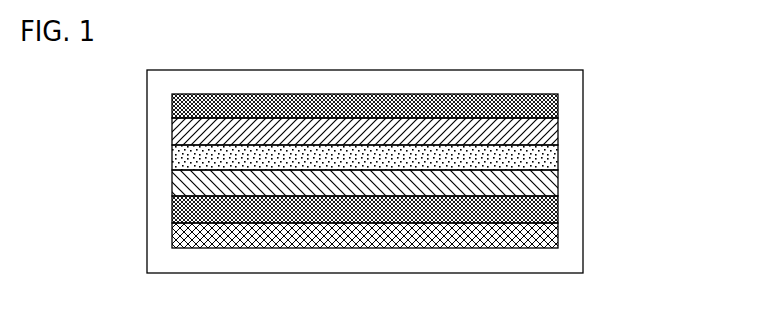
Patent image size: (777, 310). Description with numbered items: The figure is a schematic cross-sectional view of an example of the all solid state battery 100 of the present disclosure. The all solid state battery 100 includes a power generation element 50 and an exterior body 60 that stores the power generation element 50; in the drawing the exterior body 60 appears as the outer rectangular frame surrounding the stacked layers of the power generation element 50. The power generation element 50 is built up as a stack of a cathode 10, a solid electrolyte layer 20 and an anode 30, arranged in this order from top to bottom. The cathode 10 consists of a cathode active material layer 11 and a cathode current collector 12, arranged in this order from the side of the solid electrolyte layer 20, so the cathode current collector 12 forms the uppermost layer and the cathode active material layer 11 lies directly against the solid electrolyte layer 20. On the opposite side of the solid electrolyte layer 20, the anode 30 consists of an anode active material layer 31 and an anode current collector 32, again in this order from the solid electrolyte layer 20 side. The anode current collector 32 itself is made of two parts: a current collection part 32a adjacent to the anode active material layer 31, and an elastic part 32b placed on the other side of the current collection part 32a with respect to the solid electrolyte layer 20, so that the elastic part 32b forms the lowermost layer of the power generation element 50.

The all solid state battery 100 is at (557, 53).
The exterior body 60 is at (553, 82).
The power generation element 50 is at (406, 170).
The cathode 10 is at (417, 119).
The cathode current collector 12 is at (557, 105).
The cathode active material layer 11 is at (557, 128).
The solid electrolyte layer 20 is at (557, 153).
The anode 30 is at (378, 209).
The anode active material layer 31 is at (557, 183).
The anode current collector 32 is at (361, 222).
The current collection part 32a is at (172, 213).
The elastic part 32b is at (172, 238).